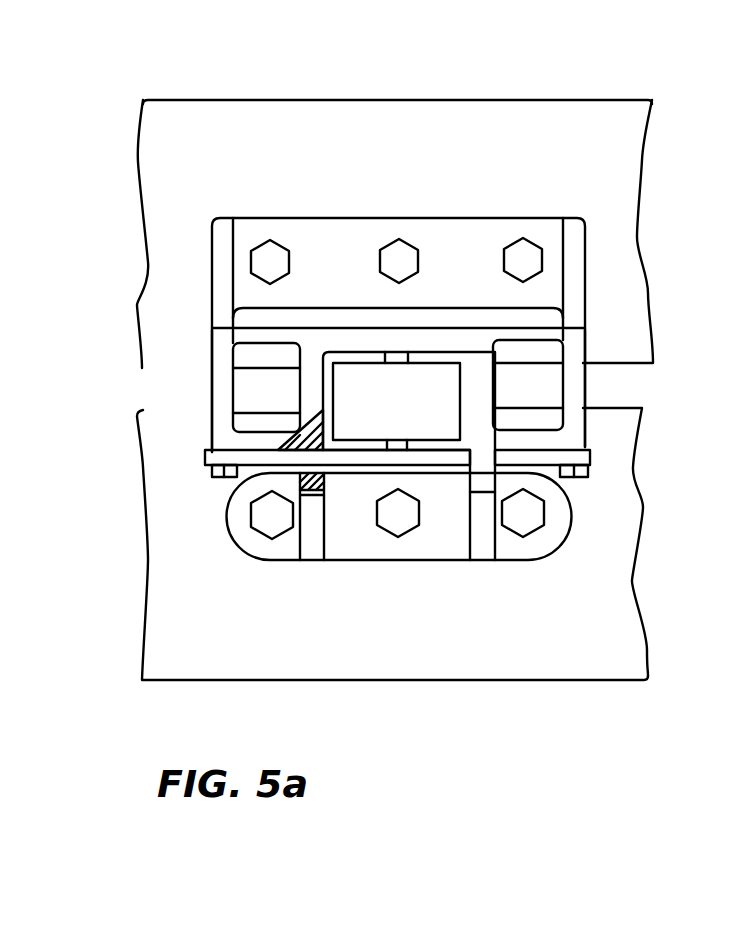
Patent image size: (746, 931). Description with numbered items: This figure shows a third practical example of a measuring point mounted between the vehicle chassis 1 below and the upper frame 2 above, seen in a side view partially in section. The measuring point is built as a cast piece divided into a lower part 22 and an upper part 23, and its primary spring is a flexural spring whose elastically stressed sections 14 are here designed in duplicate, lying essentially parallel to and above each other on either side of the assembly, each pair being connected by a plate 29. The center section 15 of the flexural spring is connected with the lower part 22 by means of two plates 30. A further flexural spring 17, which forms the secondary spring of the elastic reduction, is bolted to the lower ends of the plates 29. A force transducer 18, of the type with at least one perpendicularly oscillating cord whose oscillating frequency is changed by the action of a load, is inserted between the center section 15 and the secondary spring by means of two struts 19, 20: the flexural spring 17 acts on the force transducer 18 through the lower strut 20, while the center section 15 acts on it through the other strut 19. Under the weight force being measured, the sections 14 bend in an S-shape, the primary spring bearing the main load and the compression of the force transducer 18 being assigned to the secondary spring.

The chassis 1 is at (620, 653).
The upper frame 2 is at (620, 112).
The elastically stressed sections 14 is at (250, 333).
The center section 15 is at (413, 338).
The flexural spring 17 is at (522, 457).
The force transducer 18 is at (410, 428).
The strut 19 is at (400, 357).
The strut 20 is at (400, 450).
The lower part 22 is at (357, 560).
The upper part 23 is at (342, 253).
The plate 29 is at (222, 378).
The plates 30 is at (315, 402).